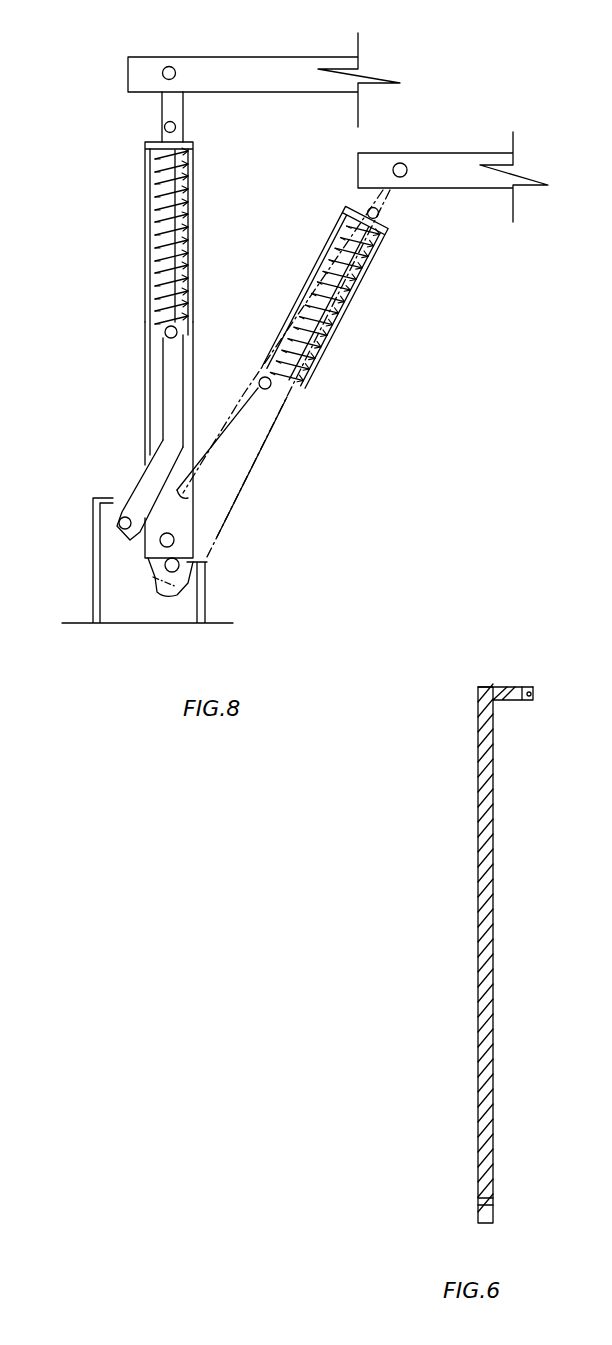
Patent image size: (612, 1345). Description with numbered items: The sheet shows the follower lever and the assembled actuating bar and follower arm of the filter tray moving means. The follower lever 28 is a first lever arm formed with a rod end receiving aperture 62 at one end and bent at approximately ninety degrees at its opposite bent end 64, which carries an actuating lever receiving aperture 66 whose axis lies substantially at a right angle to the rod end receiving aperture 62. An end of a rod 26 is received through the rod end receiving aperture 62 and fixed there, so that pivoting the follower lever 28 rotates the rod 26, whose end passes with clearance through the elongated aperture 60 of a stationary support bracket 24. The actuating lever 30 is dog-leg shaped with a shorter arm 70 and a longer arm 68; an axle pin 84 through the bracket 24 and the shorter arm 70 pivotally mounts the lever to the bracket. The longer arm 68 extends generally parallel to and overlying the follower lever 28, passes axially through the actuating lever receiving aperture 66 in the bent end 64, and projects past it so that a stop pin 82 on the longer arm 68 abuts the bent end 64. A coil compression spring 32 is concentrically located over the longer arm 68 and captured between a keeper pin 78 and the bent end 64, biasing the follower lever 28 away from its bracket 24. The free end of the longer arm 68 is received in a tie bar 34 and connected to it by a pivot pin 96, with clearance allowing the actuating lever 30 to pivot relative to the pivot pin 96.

In FIG. 8, the stationary support bracket 24 is at (138, 608).
In FIG. 8, the rod 26 is at (172, 540).
In FIG. 8, the follower lever 28 is at (153, 420).
In FIG. 6, the follower lever 28 is at (493, 900).
In FIG. 8, the actuating lever 30 is at (161, 379).
In FIG. 8, the coil compression spring 32 is at (190, 223).
In FIG. 8, the tie bar 34 is at (275, 77).
In FIG. 8, the elongated aperture 60 is at (168, 597).
In FIG. 6, the rod end receiving aperture 62 is at (497, 1202).
In FIG. 8, the bent end 64 is at (187, 148).
In FIG. 6, the bent end 64 is at (503, 684).
In FIG. 6, the actuating lever receiving aperture 66 is at (517, 690).
In FIG. 8, the longer arm 68 is at (177, 240).
In FIG. 8, the shorter arm 70 is at (150, 482).
In FIG. 8, the keeper pin 78 is at (168, 333).
In FIG. 8, the stop pin 82 is at (163, 128).
In FIG. 8, the axle pin 84 is at (118, 524).
In FIG. 8, the pivot pin 96 is at (163, 73).